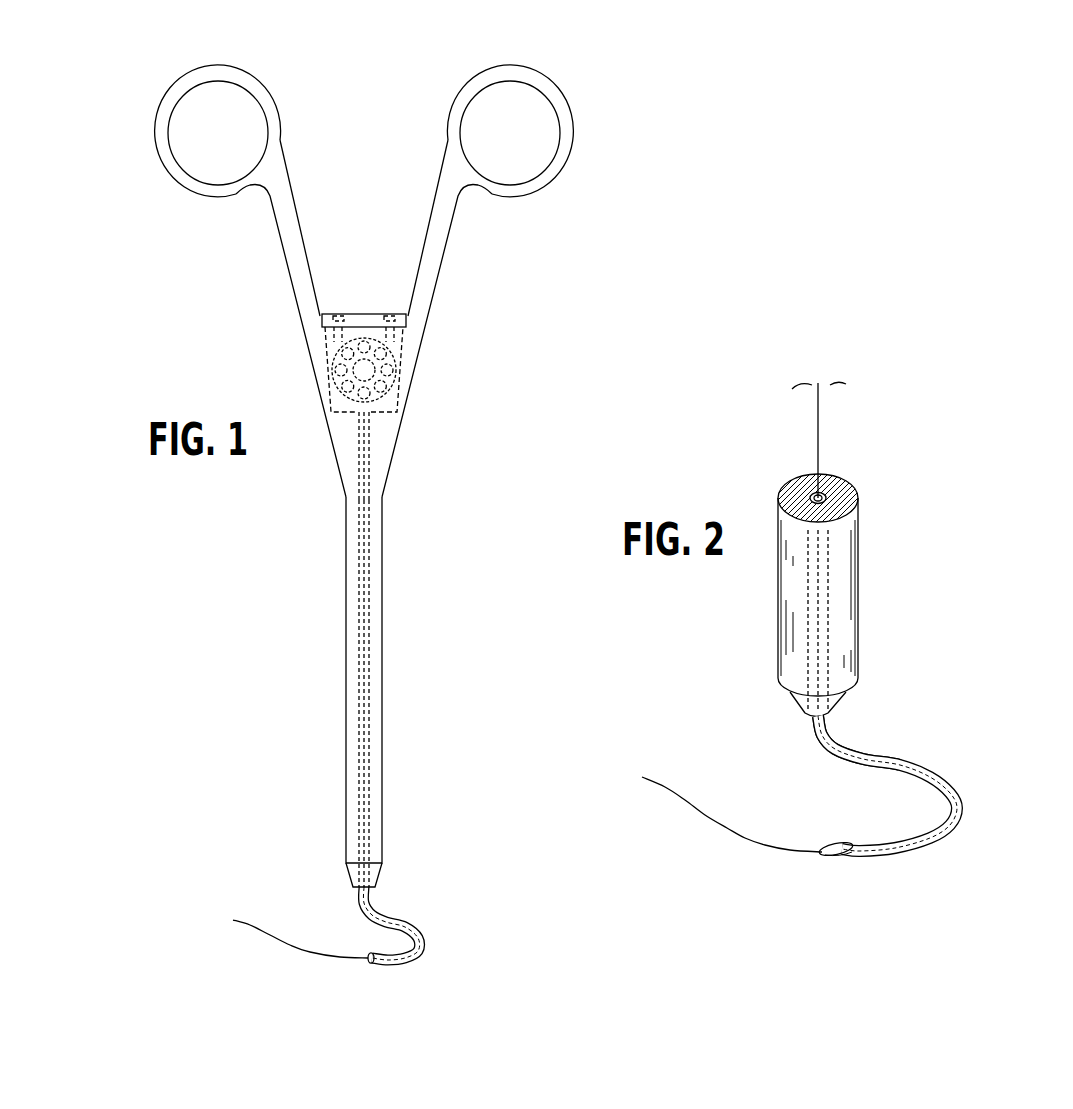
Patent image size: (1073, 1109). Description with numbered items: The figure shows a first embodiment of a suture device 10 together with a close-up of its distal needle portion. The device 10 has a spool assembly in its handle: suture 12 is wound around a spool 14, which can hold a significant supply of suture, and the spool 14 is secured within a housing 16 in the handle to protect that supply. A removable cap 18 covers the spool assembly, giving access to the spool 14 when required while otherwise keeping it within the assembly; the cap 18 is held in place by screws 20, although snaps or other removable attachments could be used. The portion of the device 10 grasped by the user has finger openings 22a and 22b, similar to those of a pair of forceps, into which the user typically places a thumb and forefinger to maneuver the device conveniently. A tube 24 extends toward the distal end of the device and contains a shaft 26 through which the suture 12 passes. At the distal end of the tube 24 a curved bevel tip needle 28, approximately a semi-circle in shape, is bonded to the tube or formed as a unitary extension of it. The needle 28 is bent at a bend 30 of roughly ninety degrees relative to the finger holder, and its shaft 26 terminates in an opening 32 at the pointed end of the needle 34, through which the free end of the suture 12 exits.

In FIG. 1, the suture device 10 is at (318, 632).
In FIG. 1, the suture 12 is at (366, 645).
In FIG. 2, the suture 12 is at (823, 430).
In FIG. 1, the spool 14 is at (390, 368).
In FIG. 1, the housing 16 is at (327, 356).
In FIG. 1, the removable cap 18 is at (365, 312).
In FIG. 1, the screws 20 is at (337, 314).
In FIG. 1, the finger opening 22a is at (150, 105).
In FIG. 1, the finger opening 22b is at (578, 105).
In FIG. 1, the tube 24 is at (383, 716).
In FIG. 2, the tube 24 is at (851, 481).
In FIG. 1, the shaft 26 is at (368, 472).
In FIG. 2, the shaft 26 is at (812, 495).
In FIG. 1, the curved bevel tip needle 28 is at (416, 930).
In FIG. 2, the curved bevel tip needle 28 is at (966, 772).
In FIG. 2, the bend 30 is at (836, 734).
In FIG. 2, the opening 32 is at (830, 845).
In FIG. 2, the pointed end of the needle 34 is at (820, 862).